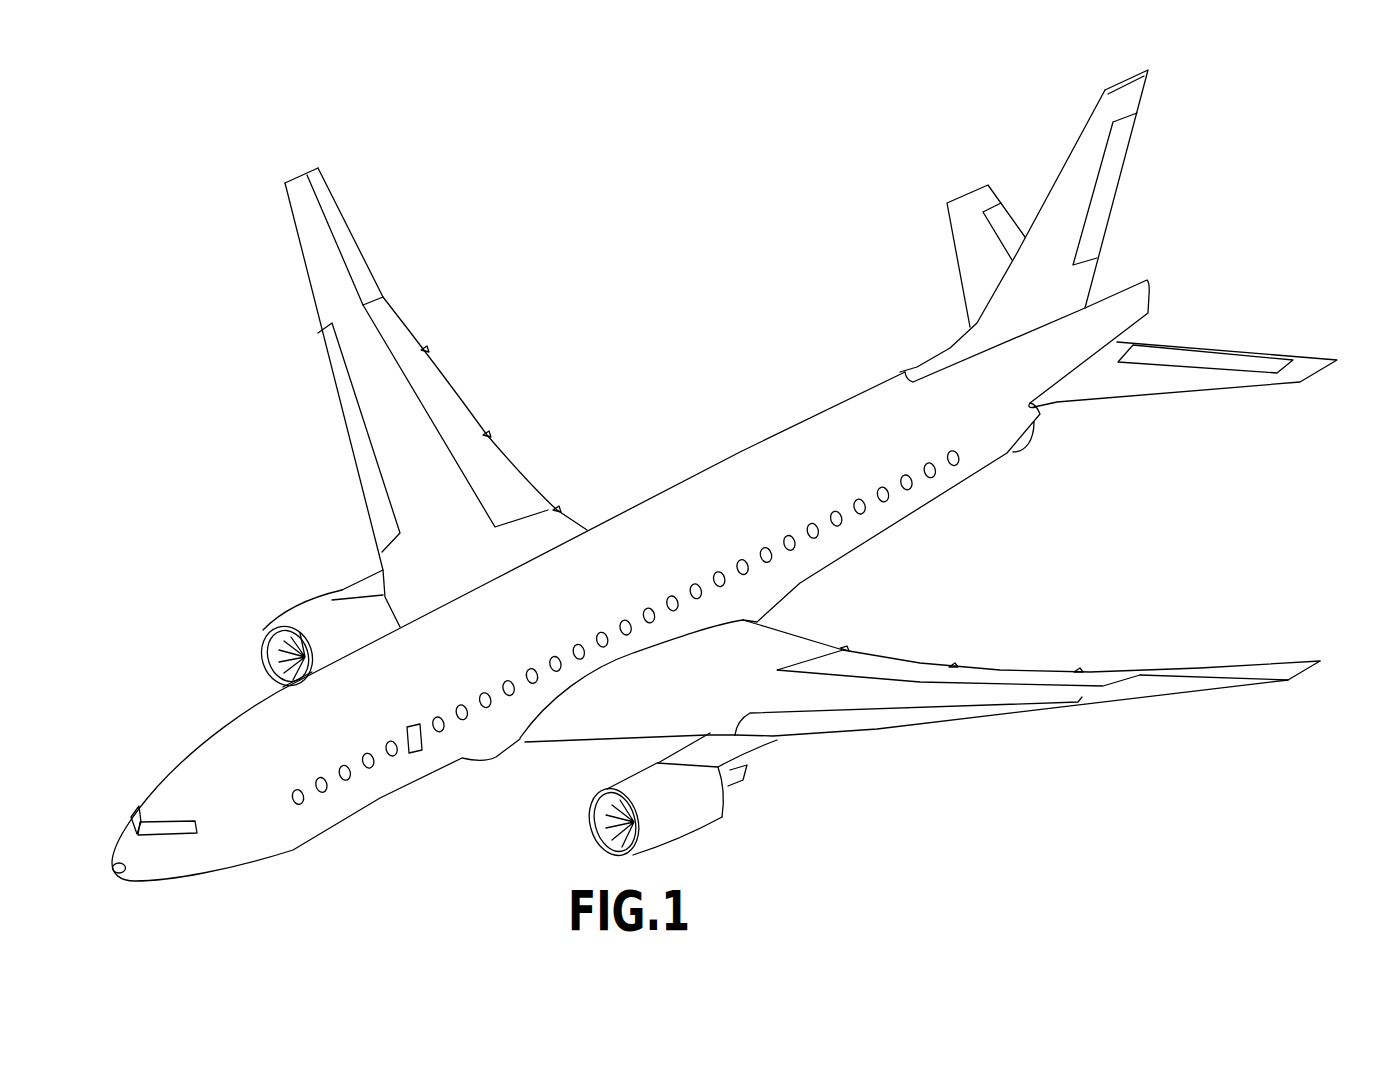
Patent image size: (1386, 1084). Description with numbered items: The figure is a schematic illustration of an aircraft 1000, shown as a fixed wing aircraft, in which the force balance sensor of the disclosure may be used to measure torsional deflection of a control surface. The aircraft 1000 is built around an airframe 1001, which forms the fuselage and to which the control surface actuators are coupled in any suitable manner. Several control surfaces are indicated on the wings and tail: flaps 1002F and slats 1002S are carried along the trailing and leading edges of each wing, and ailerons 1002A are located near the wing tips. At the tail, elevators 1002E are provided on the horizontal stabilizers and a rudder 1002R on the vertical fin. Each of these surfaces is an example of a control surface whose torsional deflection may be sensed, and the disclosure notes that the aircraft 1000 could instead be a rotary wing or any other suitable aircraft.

The aircraft 1000 is at (215, 395).
The airframe 1001 is at (182, 753).
The ailerons 1002A is at (348, 232).
The flaps 1002F is at (455, 392).
The slats 1002S is at (348, 444).
The elevators 1002E is at (1007, 220).
The rudder 1002R is at (1117, 192).